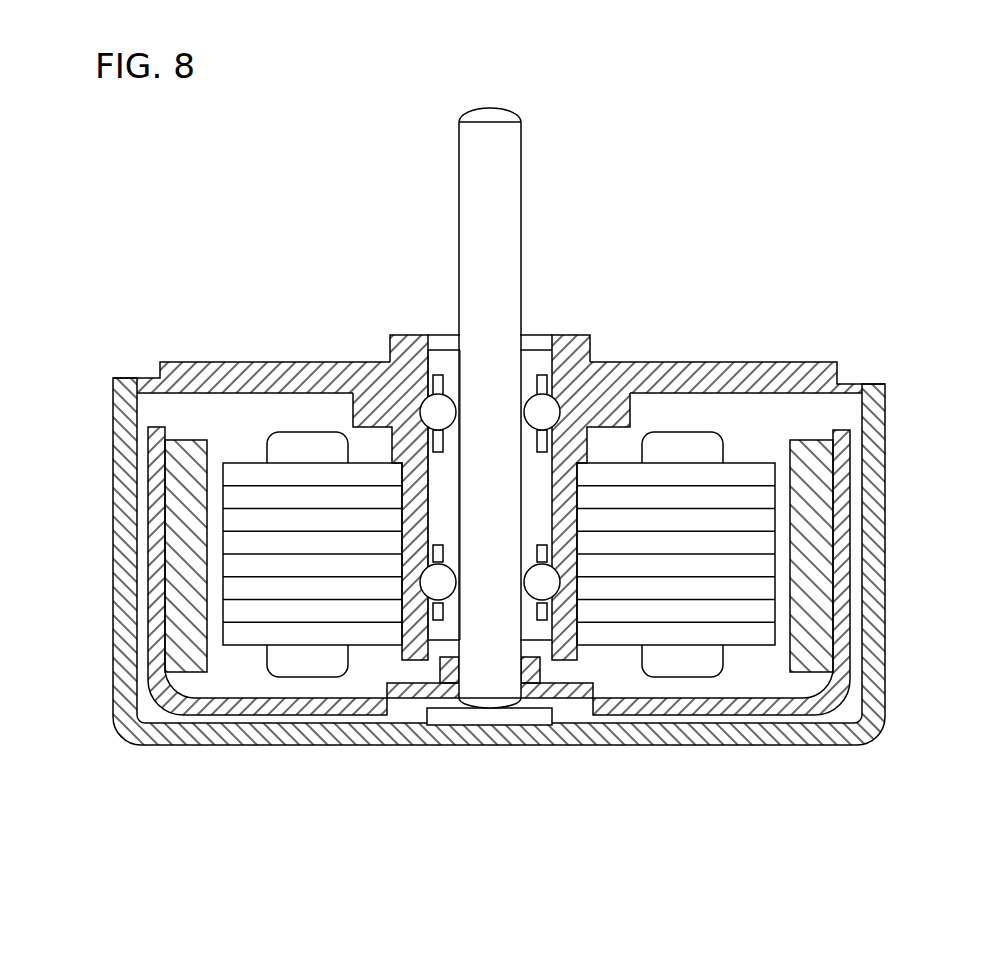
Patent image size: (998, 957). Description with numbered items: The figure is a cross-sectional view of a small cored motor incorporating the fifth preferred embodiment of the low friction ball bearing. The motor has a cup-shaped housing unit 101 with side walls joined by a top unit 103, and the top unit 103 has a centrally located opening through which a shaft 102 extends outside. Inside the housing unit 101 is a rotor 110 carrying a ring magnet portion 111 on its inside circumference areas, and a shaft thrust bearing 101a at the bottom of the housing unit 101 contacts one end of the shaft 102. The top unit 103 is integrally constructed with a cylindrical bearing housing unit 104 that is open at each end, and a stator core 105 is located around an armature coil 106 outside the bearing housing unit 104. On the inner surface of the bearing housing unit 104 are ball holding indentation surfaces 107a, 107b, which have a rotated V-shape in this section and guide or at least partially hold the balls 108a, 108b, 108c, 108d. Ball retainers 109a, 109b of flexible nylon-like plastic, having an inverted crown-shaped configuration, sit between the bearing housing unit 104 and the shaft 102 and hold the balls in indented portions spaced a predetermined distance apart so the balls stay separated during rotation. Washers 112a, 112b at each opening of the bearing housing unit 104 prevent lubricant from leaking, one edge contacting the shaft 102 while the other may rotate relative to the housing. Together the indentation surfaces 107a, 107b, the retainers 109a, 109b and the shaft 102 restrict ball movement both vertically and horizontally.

The housing unit 101 is at (875, 598).
The shaft thrust bearing 101a is at (465, 717).
The shaft 102 is at (497, 155).
The top unit 103 is at (227, 375).
The cylindrical bearing housing unit 104 is at (582, 437).
The stator core 105 is at (747, 530).
The armature coil 106 is at (697, 668).
The ball holding indentation surface 107a is at (422, 593).
The ball holding indentation surface 107b is at (428, 410).
The ball 108a is at (542, 412).
The ball 108b is at (438, 412).
The ball 108c is at (542, 582).
The ball 108d is at (438, 582).
The ball retainer 109a is at (397, 342).
The ball retainer 109b is at (540, 552).
The rotor 110 is at (252, 708).
The ring magnet portion 111 is at (172, 622).
The washer 112a is at (445, 340).
The washer 112b is at (542, 645).